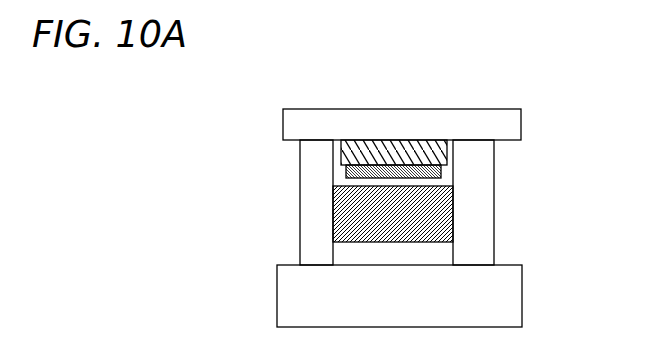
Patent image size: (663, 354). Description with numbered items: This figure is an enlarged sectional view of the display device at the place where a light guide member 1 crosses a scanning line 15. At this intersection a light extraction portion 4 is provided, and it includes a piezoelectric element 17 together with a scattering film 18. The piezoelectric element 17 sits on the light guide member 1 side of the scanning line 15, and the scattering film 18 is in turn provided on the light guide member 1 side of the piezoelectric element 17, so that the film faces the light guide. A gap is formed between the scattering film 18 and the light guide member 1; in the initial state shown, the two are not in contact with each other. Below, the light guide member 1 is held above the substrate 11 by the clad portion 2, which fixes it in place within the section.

The light guide member 1 is at (343, 217).
The clad portion 2 is at (313, 249).
The light extraction portion 4 is at (477, 174).
The substrate 11 is at (315, 297).
The scanning line 15 is at (300, 125).
The piezoelectric element 17 is at (447, 154).
The scattering film 18 is at (441, 173).